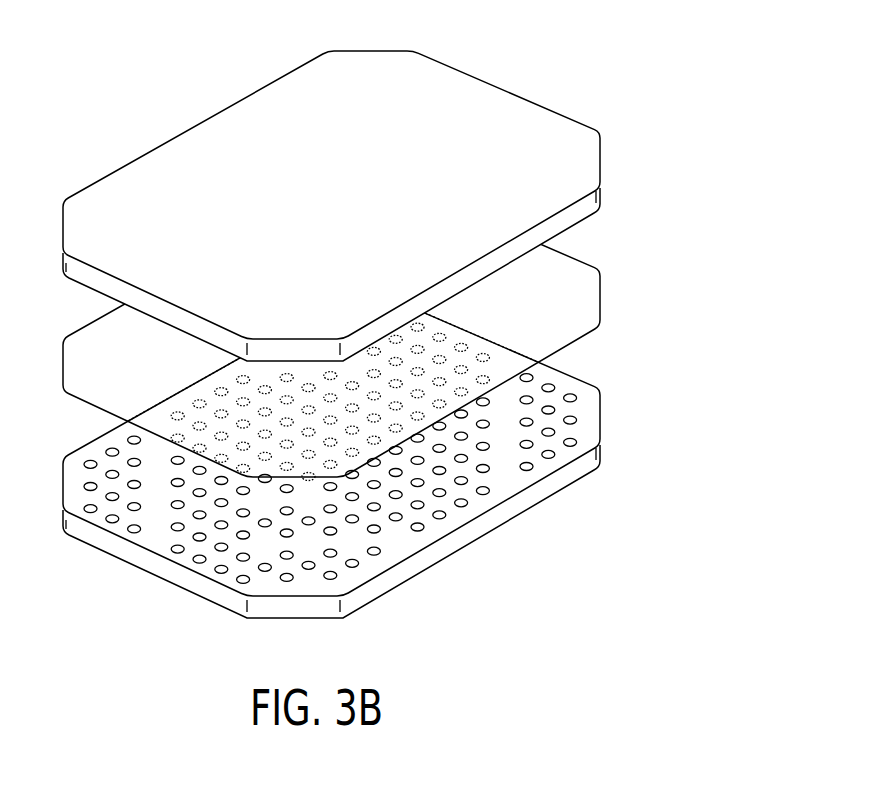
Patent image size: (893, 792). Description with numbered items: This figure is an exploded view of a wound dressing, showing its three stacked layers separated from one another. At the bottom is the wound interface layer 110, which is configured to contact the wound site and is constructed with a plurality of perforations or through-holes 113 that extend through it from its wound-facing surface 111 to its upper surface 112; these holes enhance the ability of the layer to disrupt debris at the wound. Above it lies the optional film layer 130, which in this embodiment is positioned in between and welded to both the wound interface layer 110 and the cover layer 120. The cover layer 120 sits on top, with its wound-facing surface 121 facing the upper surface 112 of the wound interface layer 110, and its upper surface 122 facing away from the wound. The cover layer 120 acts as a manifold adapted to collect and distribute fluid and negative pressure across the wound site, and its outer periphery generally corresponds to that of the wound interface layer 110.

The wound interface layer 110 is at (377, 488).
The wound-facing surface 111 is at (344, 614).
The upper surface 112 is at (399, 542).
The through-holes 113 is at (574, 440).
The cover layer 120 is at (396, 202).
The wound-facing surface 121 is at (585, 217).
The upper surface 122 is at (545, 123).
The film layer 130 is at (600, 292).